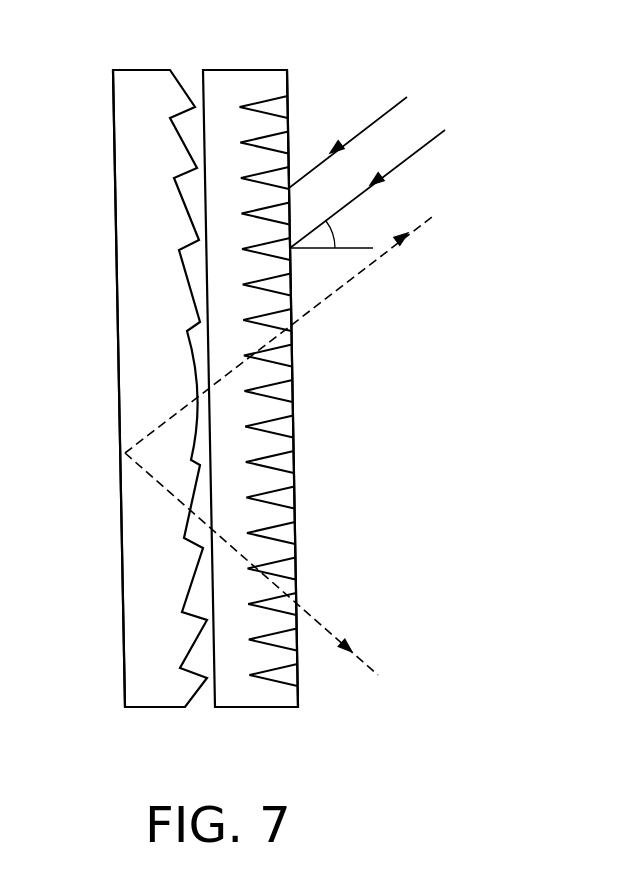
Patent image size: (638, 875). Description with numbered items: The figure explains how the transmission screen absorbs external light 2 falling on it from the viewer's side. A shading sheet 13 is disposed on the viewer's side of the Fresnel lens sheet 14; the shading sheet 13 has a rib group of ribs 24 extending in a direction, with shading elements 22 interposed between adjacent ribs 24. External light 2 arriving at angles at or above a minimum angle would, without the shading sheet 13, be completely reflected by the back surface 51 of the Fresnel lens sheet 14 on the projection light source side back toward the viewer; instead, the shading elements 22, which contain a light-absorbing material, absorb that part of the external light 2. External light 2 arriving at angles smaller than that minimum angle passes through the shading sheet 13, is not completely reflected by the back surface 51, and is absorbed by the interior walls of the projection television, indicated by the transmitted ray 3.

The Fresnel lens sheet 14 is at (139, 85).
The back surface 51 is at (118, 243).
The shading sheet 13 is at (240, 90).
The shading elements 22 is at (287, 86).
The ribs 24 is at (288, 127).
The external light 2 is at (395, 101).
The emitted light 3 is at (365, 662).